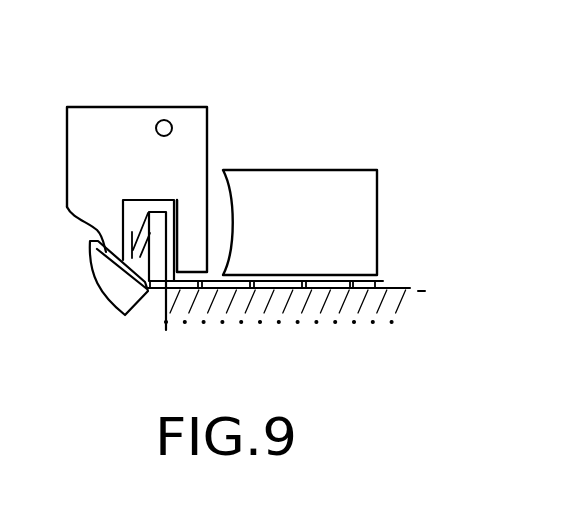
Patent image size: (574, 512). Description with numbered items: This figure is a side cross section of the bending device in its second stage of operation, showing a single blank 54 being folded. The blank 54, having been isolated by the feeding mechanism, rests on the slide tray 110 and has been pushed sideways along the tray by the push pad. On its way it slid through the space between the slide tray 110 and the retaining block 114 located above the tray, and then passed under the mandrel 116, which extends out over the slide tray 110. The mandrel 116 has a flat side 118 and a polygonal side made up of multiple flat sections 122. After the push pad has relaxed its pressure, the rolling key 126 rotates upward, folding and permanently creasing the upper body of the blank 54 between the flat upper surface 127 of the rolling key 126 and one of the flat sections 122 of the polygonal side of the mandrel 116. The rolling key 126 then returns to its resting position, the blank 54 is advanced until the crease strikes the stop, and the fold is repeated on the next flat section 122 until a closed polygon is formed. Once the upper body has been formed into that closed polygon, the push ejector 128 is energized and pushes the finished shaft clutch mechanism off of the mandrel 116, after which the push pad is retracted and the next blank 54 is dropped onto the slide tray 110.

The blank 54 is at (262, 289).
The slide tray 110 is at (323, 292).
The retaining block 114 is at (343, 170).
The mandrel 116 is at (163, 250).
The flat side 118 is at (178, 253).
The flat sections 122 is at (139, 234).
The lever 126 is at (113, 307).
The flat upper surface 127 is at (88, 231).
The push ejector 128 is at (169, 123).